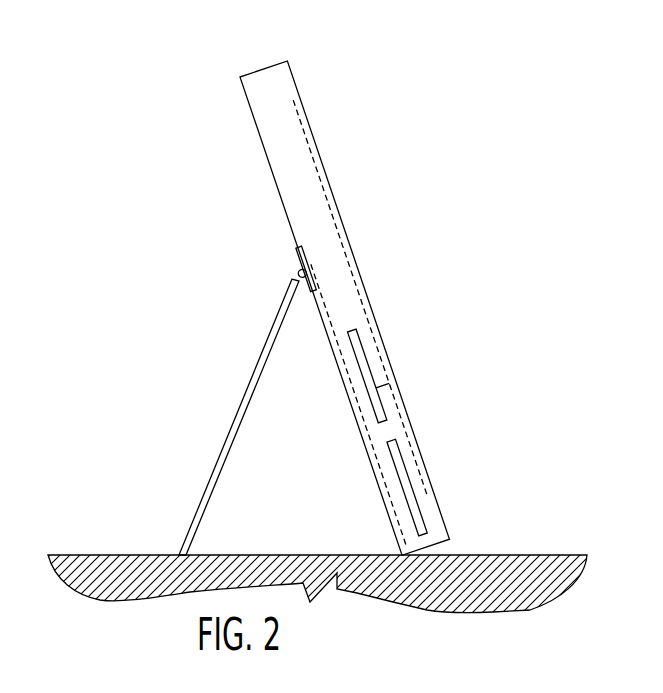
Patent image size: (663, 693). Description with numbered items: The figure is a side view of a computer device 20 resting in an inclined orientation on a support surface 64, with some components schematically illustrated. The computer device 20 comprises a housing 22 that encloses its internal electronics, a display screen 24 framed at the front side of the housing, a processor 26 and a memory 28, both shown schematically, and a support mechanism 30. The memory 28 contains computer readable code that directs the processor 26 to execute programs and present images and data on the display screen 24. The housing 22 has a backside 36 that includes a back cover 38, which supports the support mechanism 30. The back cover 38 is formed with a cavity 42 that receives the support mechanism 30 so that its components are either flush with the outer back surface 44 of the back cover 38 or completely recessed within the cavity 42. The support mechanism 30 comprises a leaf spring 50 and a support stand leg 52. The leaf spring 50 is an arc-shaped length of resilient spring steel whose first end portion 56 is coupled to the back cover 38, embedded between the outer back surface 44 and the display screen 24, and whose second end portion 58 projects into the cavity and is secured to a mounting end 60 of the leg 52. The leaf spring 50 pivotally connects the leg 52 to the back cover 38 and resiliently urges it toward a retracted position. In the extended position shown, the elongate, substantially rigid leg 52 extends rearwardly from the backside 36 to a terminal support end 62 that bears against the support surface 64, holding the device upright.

The computer device 20 is at (138, 158).
The housing 22 is at (298, 80).
The display screen 24 is at (345, 234).
The processor 26 is at (358, 346).
The memory 28 is at (420, 516).
The support mechanism 30 is at (251, 288).
The backside 36 is at (212, 140).
The back cover 38 is at (270, 172).
The cavity 42 is at (398, 531).
The outer back surface 44 is at (285, 215).
The leaf spring 50 is at (316, 303).
The support stand leg 52 is at (228, 442).
The first end portion 56 is at (302, 250).
The second end portion 58 is at (297, 287).
The mounting end 60 is at (297, 282).
The terminal support end 62 is at (176, 552).
The support surface 64 is at (572, 557).